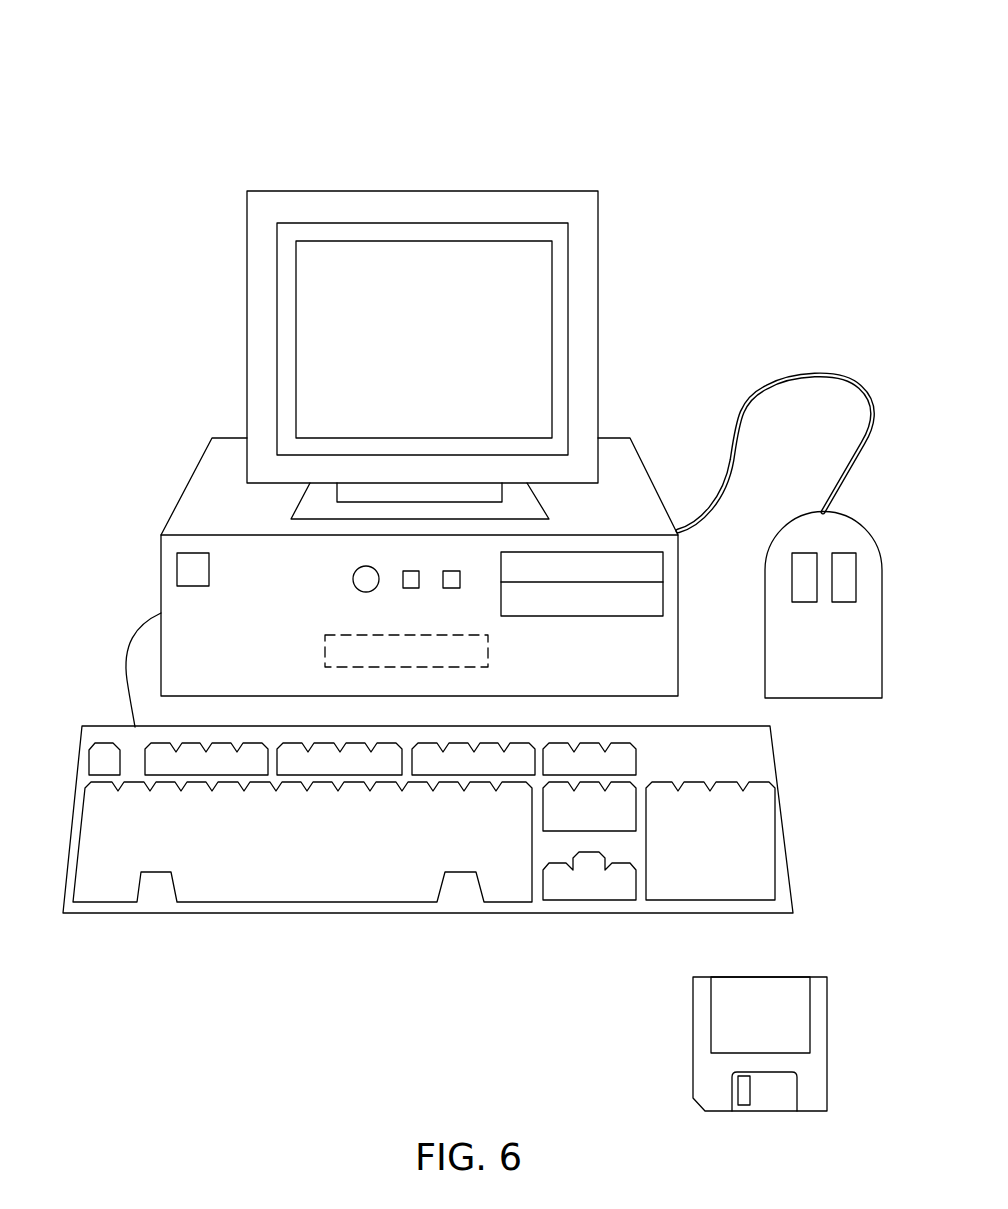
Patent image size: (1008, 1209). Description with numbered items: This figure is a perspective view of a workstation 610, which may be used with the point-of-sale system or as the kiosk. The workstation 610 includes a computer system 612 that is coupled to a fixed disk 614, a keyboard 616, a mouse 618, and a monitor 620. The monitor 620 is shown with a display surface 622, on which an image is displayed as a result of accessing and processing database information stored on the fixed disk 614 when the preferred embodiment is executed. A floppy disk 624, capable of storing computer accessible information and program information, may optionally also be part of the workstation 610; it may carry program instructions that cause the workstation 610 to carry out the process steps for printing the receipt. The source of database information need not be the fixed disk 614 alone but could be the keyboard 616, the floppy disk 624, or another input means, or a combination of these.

The workstation 610 is at (689, 62).
The computer system 612 is at (499, 551).
The fixed disk 614 is at (488, 648).
The keyboard 616 is at (780, 866).
The mouse 618 is at (882, 600).
The monitor 620 is at (471, 355).
The display surface 622 is at (415, 326).
The floppy disk 624 is at (795, 977).